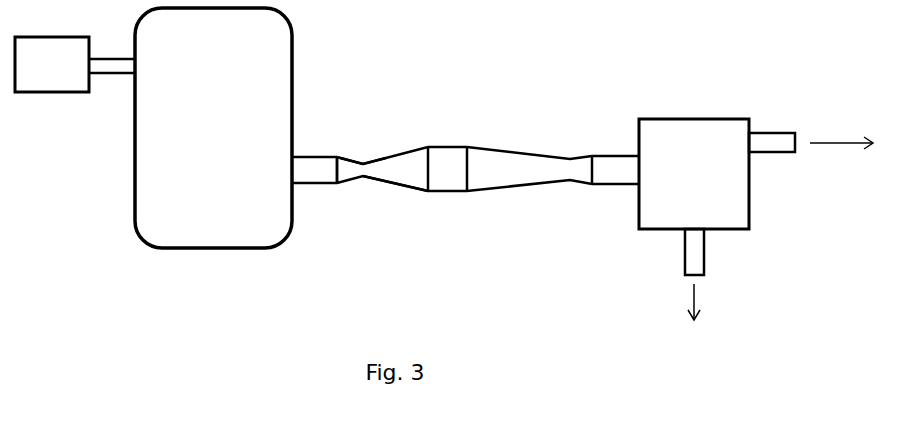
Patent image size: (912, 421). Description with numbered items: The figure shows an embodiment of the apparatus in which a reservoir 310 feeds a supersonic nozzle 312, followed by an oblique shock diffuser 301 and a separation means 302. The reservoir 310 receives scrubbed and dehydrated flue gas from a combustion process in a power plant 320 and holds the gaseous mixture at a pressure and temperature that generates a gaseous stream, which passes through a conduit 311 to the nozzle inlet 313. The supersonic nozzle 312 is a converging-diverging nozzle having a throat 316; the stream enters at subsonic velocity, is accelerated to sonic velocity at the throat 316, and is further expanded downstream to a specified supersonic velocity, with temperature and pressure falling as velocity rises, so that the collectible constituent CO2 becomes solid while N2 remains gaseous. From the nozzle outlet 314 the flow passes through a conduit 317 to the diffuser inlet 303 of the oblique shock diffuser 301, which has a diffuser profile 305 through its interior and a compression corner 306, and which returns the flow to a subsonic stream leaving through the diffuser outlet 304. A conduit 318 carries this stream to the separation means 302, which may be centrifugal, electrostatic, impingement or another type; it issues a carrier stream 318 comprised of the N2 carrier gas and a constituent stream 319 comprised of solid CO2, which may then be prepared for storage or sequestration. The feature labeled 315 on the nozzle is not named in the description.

The oblique shock diffuser 301 is at (444, 165).
The separation means 302 is at (706, 182).
The diffuser inlet 303 is at (464, 168).
The diffuser outlet 304 is at (588, 170).
The diffuser profile 305 is at (525, 181).
The compression corner 306 is at (470, 151).
The reservoir 310 is at (224, 82).
The conduit 311 is at (310, 167).
The supersonic nozzle 312 is at (390, 128).
The nozzle inlet 313 is at (336, 167).
The nozzle outlet 314 is at (427, 168).
The nozzle throat 315 is at (385, 170).
The throat 316 is at (363, 163).
The conduit 317 is at (448, 160).
The conduit / carrier stream 318 is at (610, 152).
The constituent stream 319 is at (694, 298).
The power plant 320 is at (66, 73).